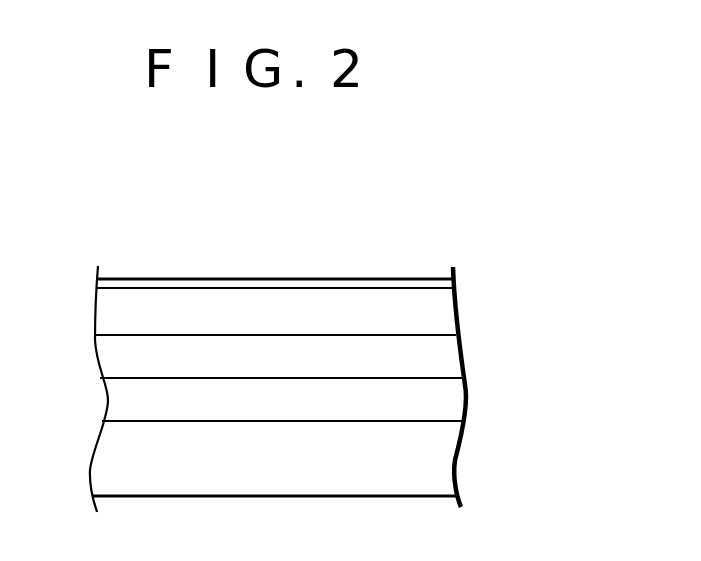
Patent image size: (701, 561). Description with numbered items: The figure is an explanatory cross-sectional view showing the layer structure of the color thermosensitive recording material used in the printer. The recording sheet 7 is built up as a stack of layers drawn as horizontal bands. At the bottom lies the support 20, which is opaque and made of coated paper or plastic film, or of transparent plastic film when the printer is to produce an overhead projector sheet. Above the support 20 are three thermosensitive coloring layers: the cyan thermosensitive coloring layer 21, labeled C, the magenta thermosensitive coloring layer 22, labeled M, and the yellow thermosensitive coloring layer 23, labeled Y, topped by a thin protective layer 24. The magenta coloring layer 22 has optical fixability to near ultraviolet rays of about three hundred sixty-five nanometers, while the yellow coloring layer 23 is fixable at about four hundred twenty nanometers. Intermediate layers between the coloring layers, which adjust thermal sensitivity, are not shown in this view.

The recording sheet 7 is at (289, 268).
The support 20 is at (437, 468).
The cyan thermosensitive coloring layer 21 is at (448, 403).
The magenta thermosensitive coloring layer 22 is at (443, 358).
The yellow thermosensitive coloring layer 23 is at (442, 315).
The protective layer 24 is at (447, 287).